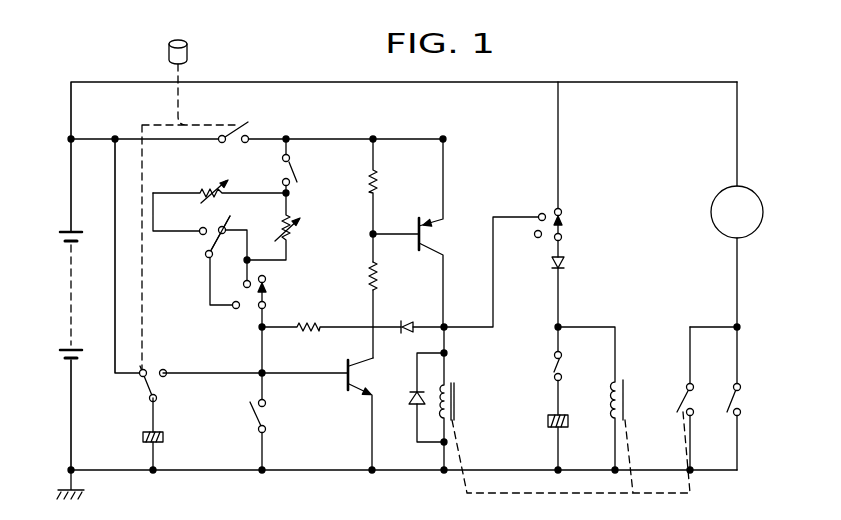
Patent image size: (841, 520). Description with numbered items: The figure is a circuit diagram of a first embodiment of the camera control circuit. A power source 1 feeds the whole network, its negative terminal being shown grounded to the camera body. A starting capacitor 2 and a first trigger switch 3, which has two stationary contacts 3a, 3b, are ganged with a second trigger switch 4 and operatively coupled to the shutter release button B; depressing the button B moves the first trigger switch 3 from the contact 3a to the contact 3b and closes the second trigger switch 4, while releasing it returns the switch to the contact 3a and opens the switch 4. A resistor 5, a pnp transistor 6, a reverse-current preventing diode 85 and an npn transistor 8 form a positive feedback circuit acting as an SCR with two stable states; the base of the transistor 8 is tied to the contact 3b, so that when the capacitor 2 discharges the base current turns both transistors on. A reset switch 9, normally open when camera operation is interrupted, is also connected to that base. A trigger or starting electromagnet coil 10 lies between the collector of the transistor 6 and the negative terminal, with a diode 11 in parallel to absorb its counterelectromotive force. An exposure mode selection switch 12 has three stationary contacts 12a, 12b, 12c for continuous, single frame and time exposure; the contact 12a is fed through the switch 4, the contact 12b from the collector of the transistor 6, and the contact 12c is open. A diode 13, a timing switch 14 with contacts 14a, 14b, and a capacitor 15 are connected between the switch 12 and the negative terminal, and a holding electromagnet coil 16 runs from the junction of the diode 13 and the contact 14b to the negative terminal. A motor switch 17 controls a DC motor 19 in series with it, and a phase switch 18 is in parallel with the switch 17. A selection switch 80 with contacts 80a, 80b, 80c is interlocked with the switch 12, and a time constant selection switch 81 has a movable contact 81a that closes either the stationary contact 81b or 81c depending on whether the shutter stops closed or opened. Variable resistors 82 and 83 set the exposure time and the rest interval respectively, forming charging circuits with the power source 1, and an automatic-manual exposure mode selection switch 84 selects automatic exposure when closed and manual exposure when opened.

The shutter release button B is at (188, 49).
The power source 1 is at (73, 347).
The starting capacitor 2 is at (166, 437).
The first trigger switch 3 is at (148, 372).
The stationary contact 3a is at (141, 377).
The stationary contact 3b is at (165, 378).
The second trigger switch 4 is at (239, 120).
The resistor 5 is at (378, 278).
The pnp transistor 6 is at (425, 236).
The npn transistor 8 is at (355, 373).
The reset switch 9 is at (265, 414).
The trigger or starting electromagnet coil 10 is at (456, 398).
The diode 11 is at (415, 405).
The exposure mode selection switch 12 is at (561, 237).
The stationary contact 12a is at (561, 212).
The stationary contact 12b is at (540, 214).
The stationary contact 12c is at (538, 238).
The diode 13 is at (564, 266).
The timing switch 14 is at (556, 376).
The stationary contact 14a is at (562, 366).
The stationary contact 14b is at (556, 353).
The capacitor 15 is at (548, 421).
The electromagnet coil 16 is at (620, 380).
The motor switch 17 is at (687, 395).
The phase switch 18 is at (735, 392).
The DC motor 19 is at (725, 190).
The selection switch 80 is at (266, 305).
The stationary contact 80a is at (266, 279).
The stationary contact 80b is at (244, 287).
The stationary contact 80c is at (238, 309).
The time constant selection switch 81 is at (207, 257).
The movable contact 81a is at (215, 228).
The stationary contact 81b is at (233, 210).
The stationary contact 81c is at (200, 234).
The variable resistor 82 is at (203, 197).
The variable resistor 83 is at (291, 229).
The automatic-manual exposure mode selection switch 84 is at (293, 166).
The diode 85 is at (407, 322).